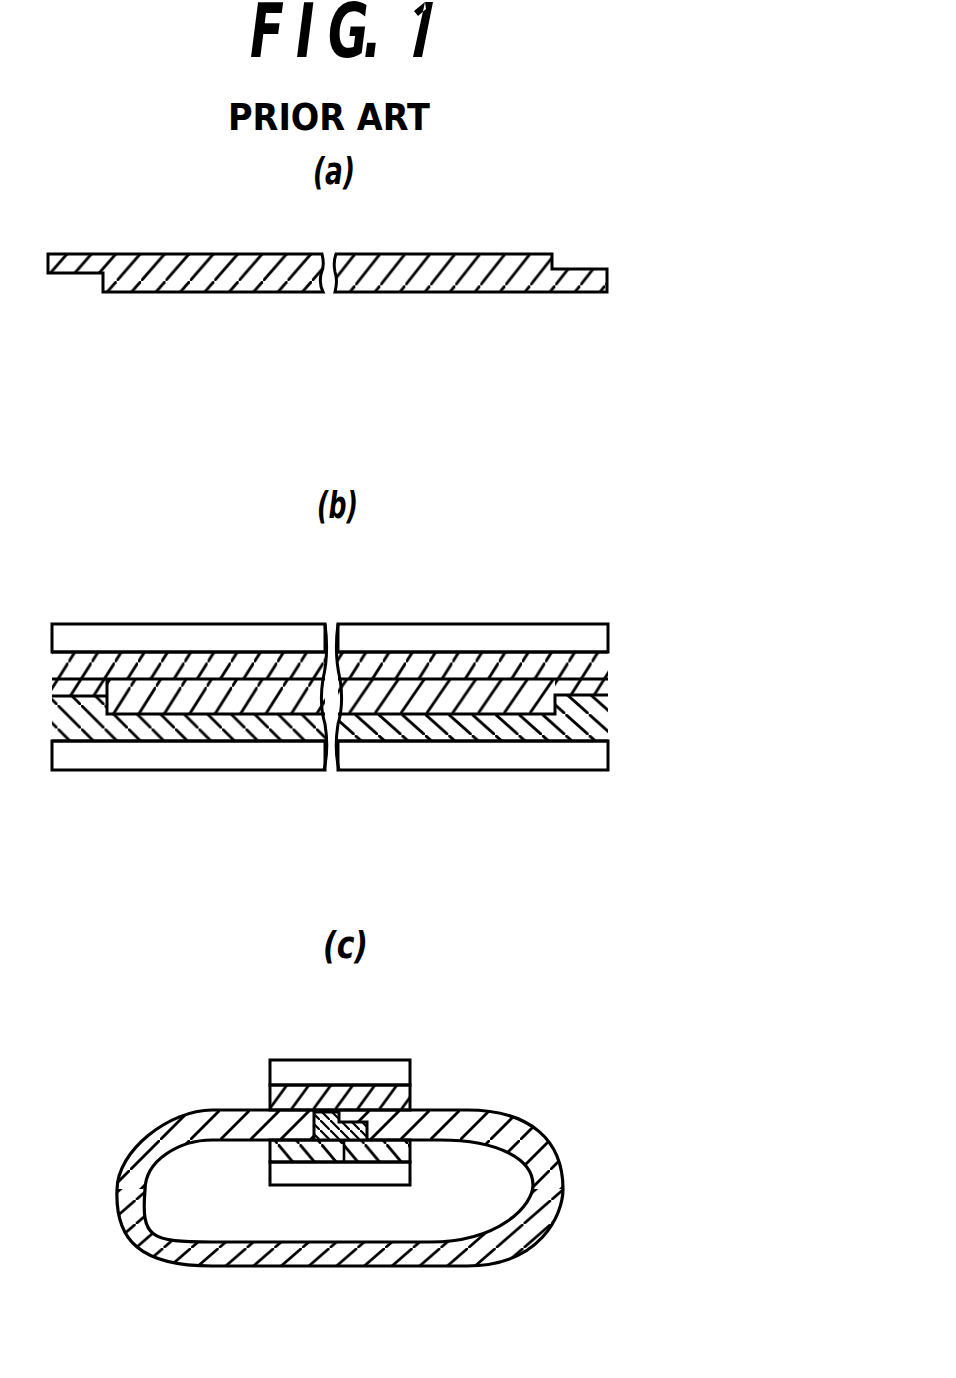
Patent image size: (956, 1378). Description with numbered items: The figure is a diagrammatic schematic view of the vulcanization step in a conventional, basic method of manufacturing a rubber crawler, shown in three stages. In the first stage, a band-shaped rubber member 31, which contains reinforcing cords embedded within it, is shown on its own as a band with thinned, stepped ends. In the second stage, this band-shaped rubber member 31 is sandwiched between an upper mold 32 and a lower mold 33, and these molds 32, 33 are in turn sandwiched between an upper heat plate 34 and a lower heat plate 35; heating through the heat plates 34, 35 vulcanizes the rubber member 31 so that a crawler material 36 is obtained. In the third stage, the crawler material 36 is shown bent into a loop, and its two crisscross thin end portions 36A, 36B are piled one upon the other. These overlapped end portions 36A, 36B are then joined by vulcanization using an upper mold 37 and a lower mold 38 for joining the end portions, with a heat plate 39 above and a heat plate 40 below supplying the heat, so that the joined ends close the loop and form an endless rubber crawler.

The band-shaped rubber member 31 is at (397, 277).
The upper mold 32 is at (595, 677).
The lower mold 33 is at (597, 730).
The heat plate 34 is at (595, 638).
The heat plate 35 is at (595, 755).
The crawler material 36 is at (527, 1128).
The thin end portion 36A is at (327, 1113).
The thin end portion 36B is at (344, 1162).
The upper mold for joining end portions 37 is at (412, 1098).
The lower mold for joining end portions 38 is at (413, 1145).
The heat plate for joining end portions 39 is at (373, 1070).
The heat plate for joining end portions 40 is at (370, 1175).